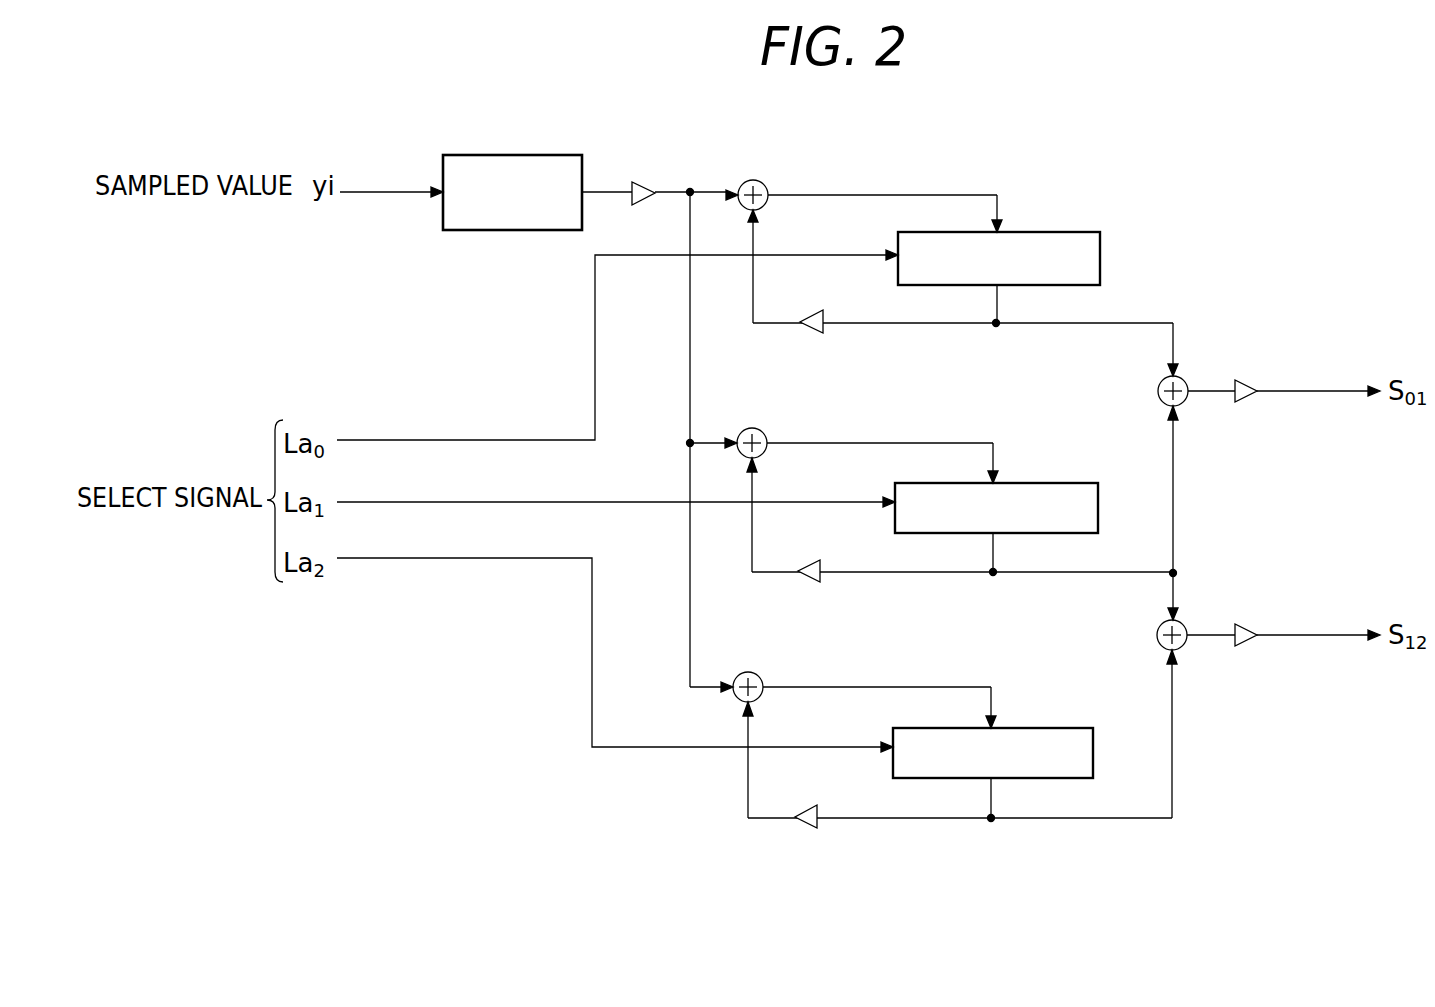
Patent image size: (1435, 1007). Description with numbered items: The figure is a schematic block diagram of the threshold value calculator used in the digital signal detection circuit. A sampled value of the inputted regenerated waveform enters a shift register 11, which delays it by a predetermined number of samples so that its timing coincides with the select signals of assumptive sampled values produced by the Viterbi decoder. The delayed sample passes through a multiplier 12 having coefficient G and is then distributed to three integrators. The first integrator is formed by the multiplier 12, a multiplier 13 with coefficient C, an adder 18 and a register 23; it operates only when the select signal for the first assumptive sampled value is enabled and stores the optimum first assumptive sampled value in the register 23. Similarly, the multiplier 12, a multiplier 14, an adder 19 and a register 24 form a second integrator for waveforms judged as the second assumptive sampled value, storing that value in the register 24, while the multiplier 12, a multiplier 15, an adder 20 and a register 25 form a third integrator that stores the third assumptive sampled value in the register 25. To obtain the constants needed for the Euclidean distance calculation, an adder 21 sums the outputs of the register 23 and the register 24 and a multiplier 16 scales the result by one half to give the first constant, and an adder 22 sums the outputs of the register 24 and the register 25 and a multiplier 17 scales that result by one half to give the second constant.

The shift register 11 is at (460, 231).
The multiplier 12 is at (652, 186).
The multiplier 13 is at (822, 312).
The multiplier 14 is at (818, 562).
The multiplier 15 is at (815, 807).
The multiplier 16 is at (1252, 384).
The multiplier 17 is at (1252, 628).
The adder 18 is at (756, 180).
The adder 19 is at (748, 428).
The adder 20 is at (745, 672).
The adder 21 is at (1186, 380).
The adder 22 is at (1185, 624).
The register 23 is at (1055, 231).
The register 24 is at (1062, 482).
The register 25 is at (1052, 727).